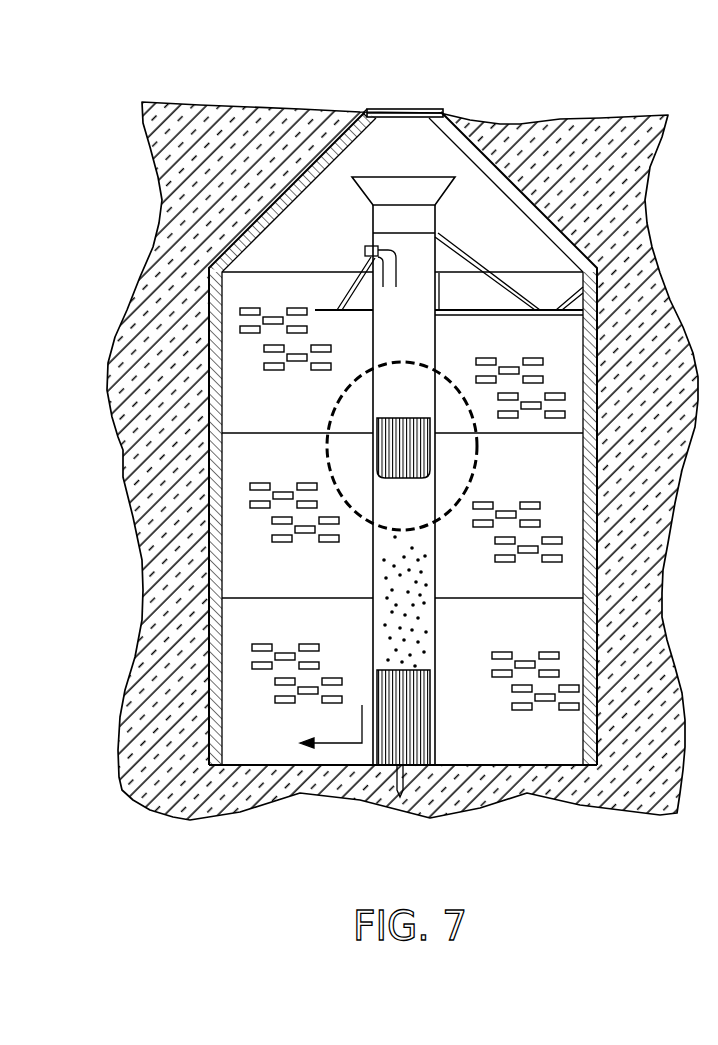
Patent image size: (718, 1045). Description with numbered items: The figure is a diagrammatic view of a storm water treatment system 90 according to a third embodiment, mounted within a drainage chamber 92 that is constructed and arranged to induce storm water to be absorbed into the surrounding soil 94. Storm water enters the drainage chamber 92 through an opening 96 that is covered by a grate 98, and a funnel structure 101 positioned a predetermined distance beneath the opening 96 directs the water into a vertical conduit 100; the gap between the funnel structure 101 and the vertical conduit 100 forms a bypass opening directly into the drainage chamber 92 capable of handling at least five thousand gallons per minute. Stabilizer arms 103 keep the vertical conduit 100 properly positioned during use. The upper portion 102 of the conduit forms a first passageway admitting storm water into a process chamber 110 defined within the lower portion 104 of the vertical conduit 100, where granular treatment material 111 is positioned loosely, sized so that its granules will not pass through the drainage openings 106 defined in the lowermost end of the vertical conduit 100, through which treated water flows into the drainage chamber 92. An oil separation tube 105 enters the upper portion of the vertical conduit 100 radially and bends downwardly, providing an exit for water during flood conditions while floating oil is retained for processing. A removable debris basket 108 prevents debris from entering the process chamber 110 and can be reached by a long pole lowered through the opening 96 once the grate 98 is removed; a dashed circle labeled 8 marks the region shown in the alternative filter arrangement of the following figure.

The system 90 is at (530, 111).
The drainage chamber 92 is at (558, 238).
The surrounding soil 94 is at (525, 794).
The opening 96 is at (416, 115).
The grate 98 is at (393, 106).
The vertical conduit 100 is at (368, 350).
The funnel structure 101 is at (423, 190).
The upper portion of the vertical conduit 102 is at (418, 262).
The stabilizer arms 103 is at (557, 303).
The lower portion of the vertical conduit 104 is at (378, 586).
The oil separation tube 105 is at (366, 248).
The drainage openings 106 is at (414, 782).
The debris basket 108 is at (388, 455).
The process chamber 110 is at (425, 568).
The treatment material 111 is at (483, 637).
The detail region of FIG. 8 is at (478, 458).